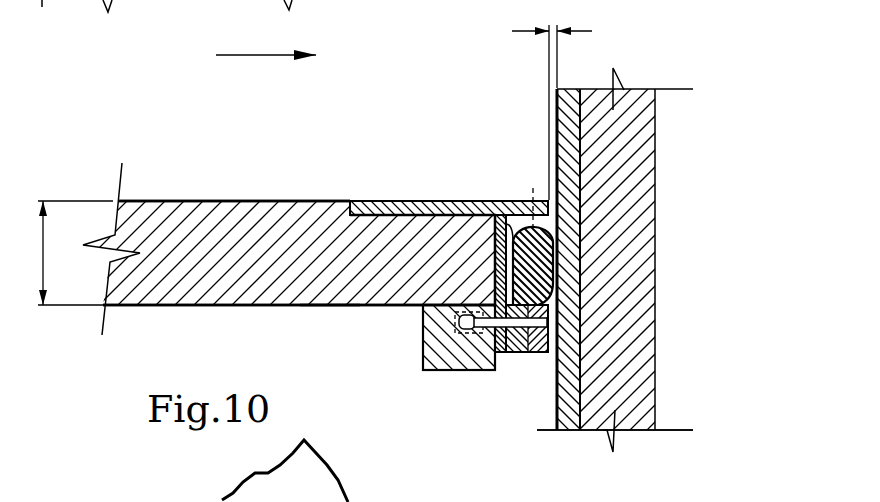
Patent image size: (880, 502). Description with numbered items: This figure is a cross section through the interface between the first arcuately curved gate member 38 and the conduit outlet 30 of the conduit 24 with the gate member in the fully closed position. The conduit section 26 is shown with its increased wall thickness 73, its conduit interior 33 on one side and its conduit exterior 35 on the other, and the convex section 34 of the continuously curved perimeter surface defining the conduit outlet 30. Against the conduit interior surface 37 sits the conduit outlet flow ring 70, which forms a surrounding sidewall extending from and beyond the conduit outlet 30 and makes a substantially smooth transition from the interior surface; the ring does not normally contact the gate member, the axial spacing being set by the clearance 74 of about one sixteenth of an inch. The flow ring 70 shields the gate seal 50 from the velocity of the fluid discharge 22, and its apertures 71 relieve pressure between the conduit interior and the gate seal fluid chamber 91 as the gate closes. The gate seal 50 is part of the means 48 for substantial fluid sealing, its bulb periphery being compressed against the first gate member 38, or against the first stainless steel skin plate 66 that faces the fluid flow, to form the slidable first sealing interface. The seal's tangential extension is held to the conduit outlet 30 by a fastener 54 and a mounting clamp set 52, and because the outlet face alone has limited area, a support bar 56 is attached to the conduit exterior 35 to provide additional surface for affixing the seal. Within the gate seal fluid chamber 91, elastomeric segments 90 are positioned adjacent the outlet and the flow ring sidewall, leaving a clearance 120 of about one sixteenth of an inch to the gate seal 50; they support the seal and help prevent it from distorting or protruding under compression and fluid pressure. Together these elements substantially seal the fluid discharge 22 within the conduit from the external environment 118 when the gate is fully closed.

The fluid discharge 22 is at (267, 56).
The conduit 24 is at (527, 109).
The conduit section 26 is at (133, 200).
The conduit outlet 30 is at (495, 285).
The conduit interior 33 is at (343, 155).
The convex section 34 is at (495, 262).
The conduit exterior 35 is at (192, 305).
The conduit interior surface 37 is at (217, 200).
The first arcuately curved gate member 38 is at (657, 202).
The means for substantial fluid sealing 48 is at (507, 200).
The gate seal 50 is at (522, 353).
The mounting clamp set 52 is at (503, 353).
The fastener 54 is at (467, 368).
The support bar 56 is at (422, 350).
The first stainless steel skin plate 66 is at (565, 431).
The conduit outlet flow ring 70 is at (357, 200).
The apertures 71 is at (533, 200).
The wall thickness 73 is at (63, 253).
The clearance 74 is at (570, 54).
The elastomeric segments 90 is at (515, 233).
The gate seal fluid chamber 91 is at (332, 305).
The external environment 118 is at (712, 307).
The clearance 120 is at (495, 245).